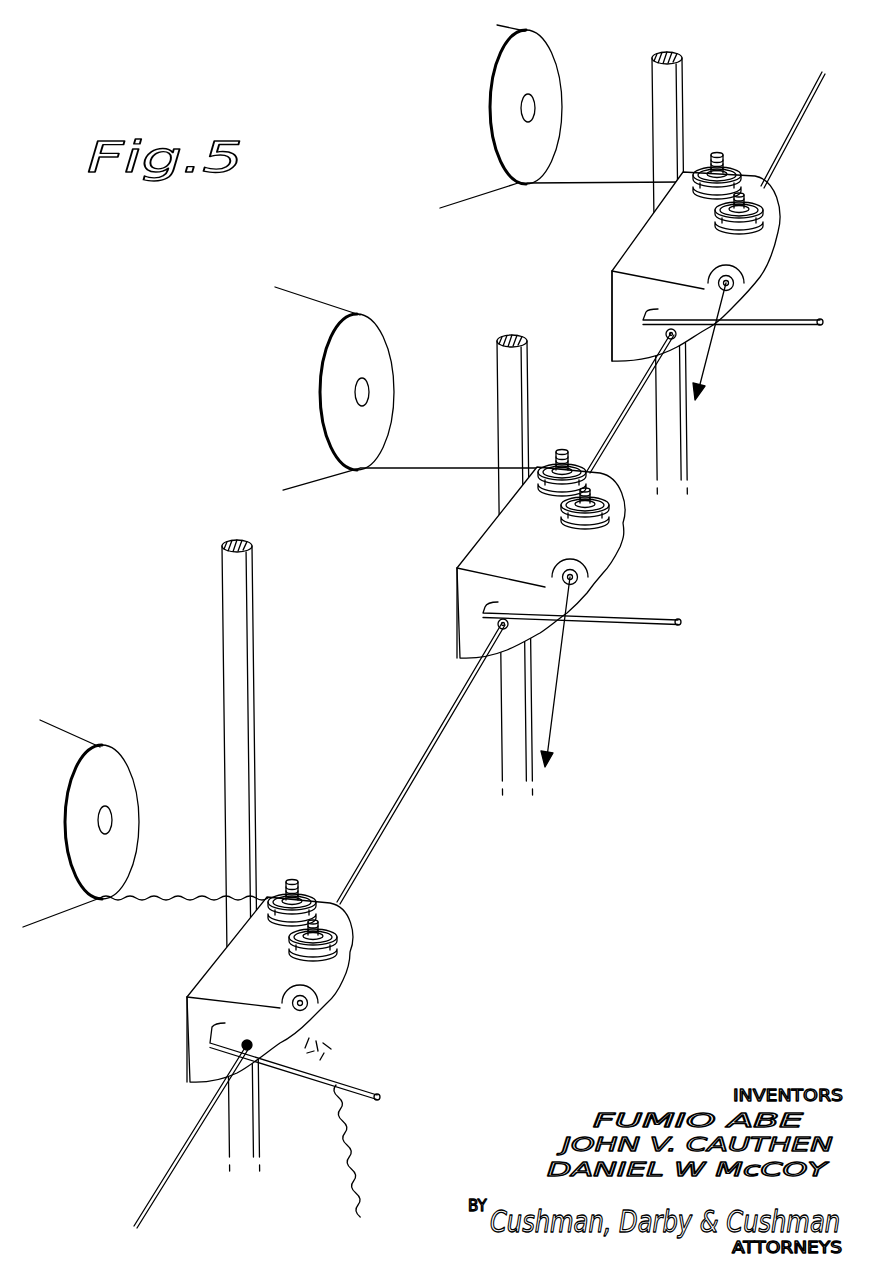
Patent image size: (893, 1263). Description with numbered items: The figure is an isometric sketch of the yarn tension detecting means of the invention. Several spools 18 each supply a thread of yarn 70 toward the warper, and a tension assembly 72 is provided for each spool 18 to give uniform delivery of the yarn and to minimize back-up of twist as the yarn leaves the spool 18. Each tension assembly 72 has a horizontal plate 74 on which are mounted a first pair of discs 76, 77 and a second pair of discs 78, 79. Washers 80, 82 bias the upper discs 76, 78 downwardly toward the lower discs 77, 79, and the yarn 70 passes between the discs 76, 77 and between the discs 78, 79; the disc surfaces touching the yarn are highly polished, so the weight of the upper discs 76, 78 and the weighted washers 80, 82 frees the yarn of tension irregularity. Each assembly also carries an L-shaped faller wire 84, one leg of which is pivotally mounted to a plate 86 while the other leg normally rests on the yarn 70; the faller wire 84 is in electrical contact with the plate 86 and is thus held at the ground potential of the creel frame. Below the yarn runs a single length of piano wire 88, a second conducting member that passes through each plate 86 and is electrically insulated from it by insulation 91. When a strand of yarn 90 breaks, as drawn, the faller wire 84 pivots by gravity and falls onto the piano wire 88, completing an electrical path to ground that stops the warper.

The spool 18 is at (542, 85).
The thread of yarn 70 is at (650, 525).
The tension assembly 72 is at (513, 574).
The horizontal plate 74 is at (474, 627).
The upper disc of first pair 76 is at (519, 526).
The lower disc of first pair 77 is at (493, 574).
The upper disc of second pair 78 is at (555, 570).
The lower disc of second pair 79 is at (507, 604).
The washer 80 is at (522, 510).
The washer 82 is at (561, 551).
The faller wire 84 is at (516, 704).
The plate 86 is at (380, 676).
The piano wire 88 is at (625, 427).
The broken strand of yarn 90 is at (192, 870).
The insulation 91 is at (457, 689).